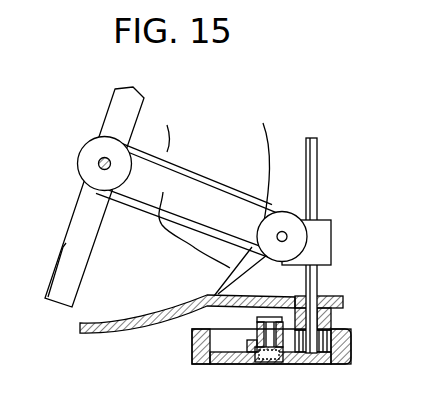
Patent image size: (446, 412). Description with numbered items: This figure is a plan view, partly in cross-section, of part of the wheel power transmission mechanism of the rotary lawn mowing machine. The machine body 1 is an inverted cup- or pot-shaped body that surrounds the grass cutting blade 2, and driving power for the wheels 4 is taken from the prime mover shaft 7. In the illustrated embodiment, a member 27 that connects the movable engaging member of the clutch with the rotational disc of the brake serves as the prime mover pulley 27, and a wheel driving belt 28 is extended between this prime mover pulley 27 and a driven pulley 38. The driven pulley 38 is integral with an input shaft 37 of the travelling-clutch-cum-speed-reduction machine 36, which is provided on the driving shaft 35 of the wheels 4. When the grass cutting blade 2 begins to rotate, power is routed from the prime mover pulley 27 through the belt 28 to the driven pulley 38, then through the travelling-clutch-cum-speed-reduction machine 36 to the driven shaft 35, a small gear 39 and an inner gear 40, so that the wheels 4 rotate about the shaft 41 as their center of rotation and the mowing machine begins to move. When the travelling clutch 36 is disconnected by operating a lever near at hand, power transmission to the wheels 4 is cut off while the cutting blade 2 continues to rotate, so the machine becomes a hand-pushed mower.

The machine body 1 is at (150, 324).
The grass cutting blade 2 is at (72, 222).
The wheels 4 is at (198, 364).
The prime mover shaft 7 is at (98, 165).
The prime mover pulley 27 is at (90, 152).
The wheel driving belt 28 is at (132, 198).
The driving shaft 35 is at (317, 165).
The travelling-clutch-cum-speed-reduction machine 36 is at (323, 238).
The input shaft 37 is at (267, 258).
The driven pulley 38 is at (291, 212).
The small gear 39 is at (311, 362).
The inner gear 40 is at (222, 363).
The shaft 41 is at (264, 363).